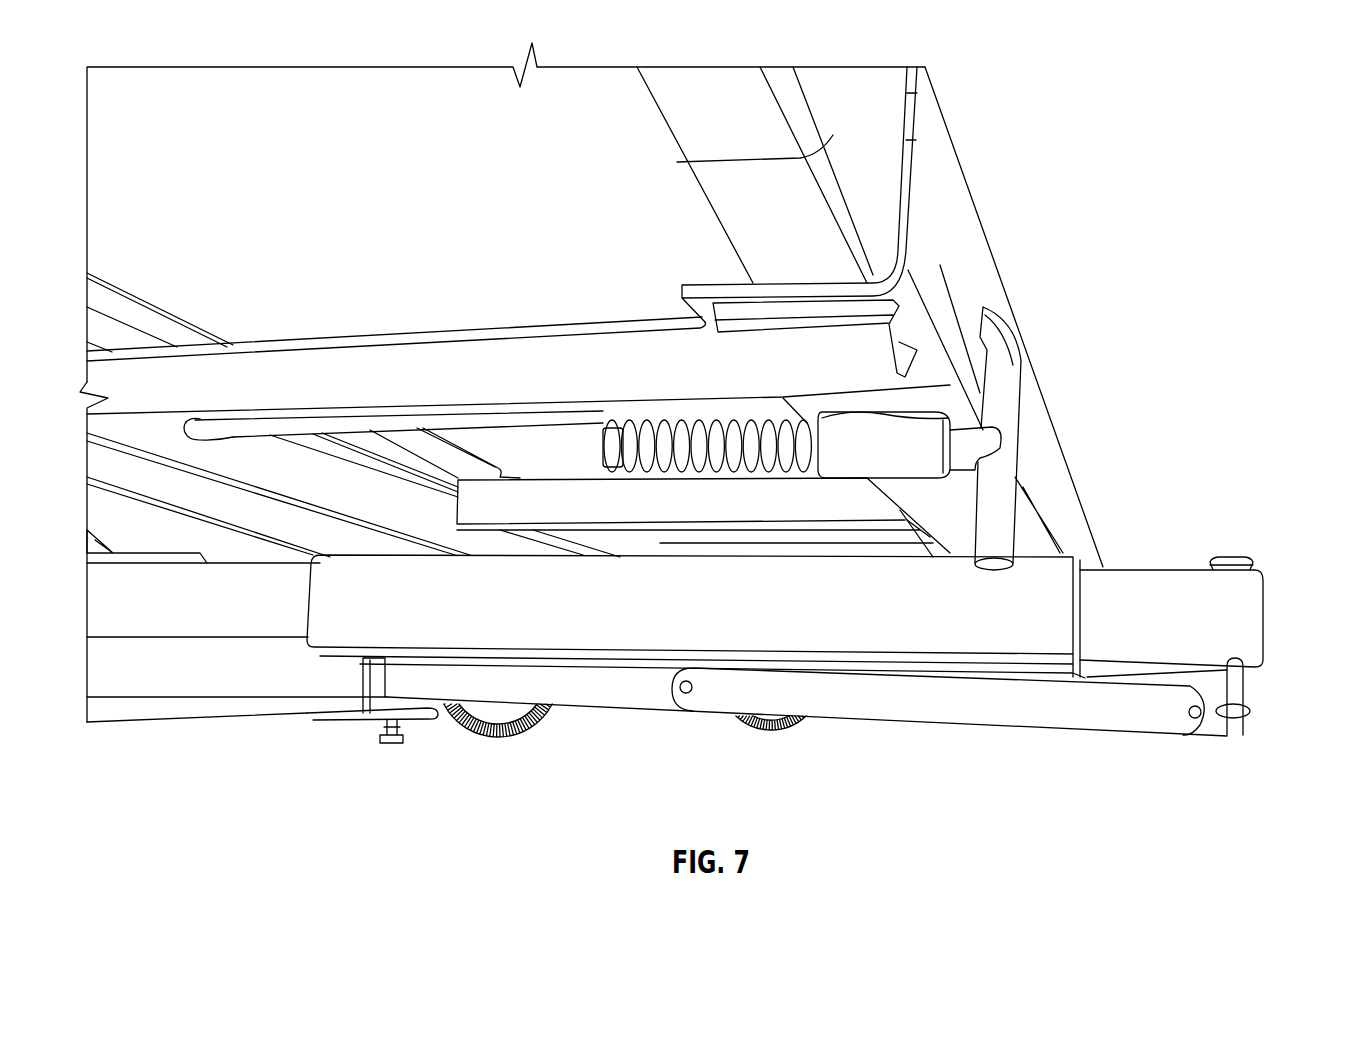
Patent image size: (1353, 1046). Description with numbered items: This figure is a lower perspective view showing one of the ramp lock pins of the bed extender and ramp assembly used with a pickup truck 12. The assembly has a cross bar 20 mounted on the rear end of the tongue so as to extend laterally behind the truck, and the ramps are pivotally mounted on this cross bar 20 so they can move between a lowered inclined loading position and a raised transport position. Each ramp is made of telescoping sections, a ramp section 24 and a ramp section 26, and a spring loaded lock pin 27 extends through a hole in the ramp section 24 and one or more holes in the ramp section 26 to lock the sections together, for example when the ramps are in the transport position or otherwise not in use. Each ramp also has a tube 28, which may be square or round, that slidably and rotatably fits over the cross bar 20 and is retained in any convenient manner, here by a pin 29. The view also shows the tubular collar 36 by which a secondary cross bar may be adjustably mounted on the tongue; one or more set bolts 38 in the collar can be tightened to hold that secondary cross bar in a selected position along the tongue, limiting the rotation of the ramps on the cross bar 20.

The pickup truck 12 is at (248, 685).
The cross bar 20 is at (1248, 623).
The ramp section 24 is at (952, 272).
The ramp section 26 is at (787, 227).
The spring loaded lock pin 27 is at (1005, 410).
The tube 28 is at (1063, 577).
The pin 29 is at (1235, 692).
The tubular collar 36 is at (410, 712).
The set bolt 38 is at (390, 745).